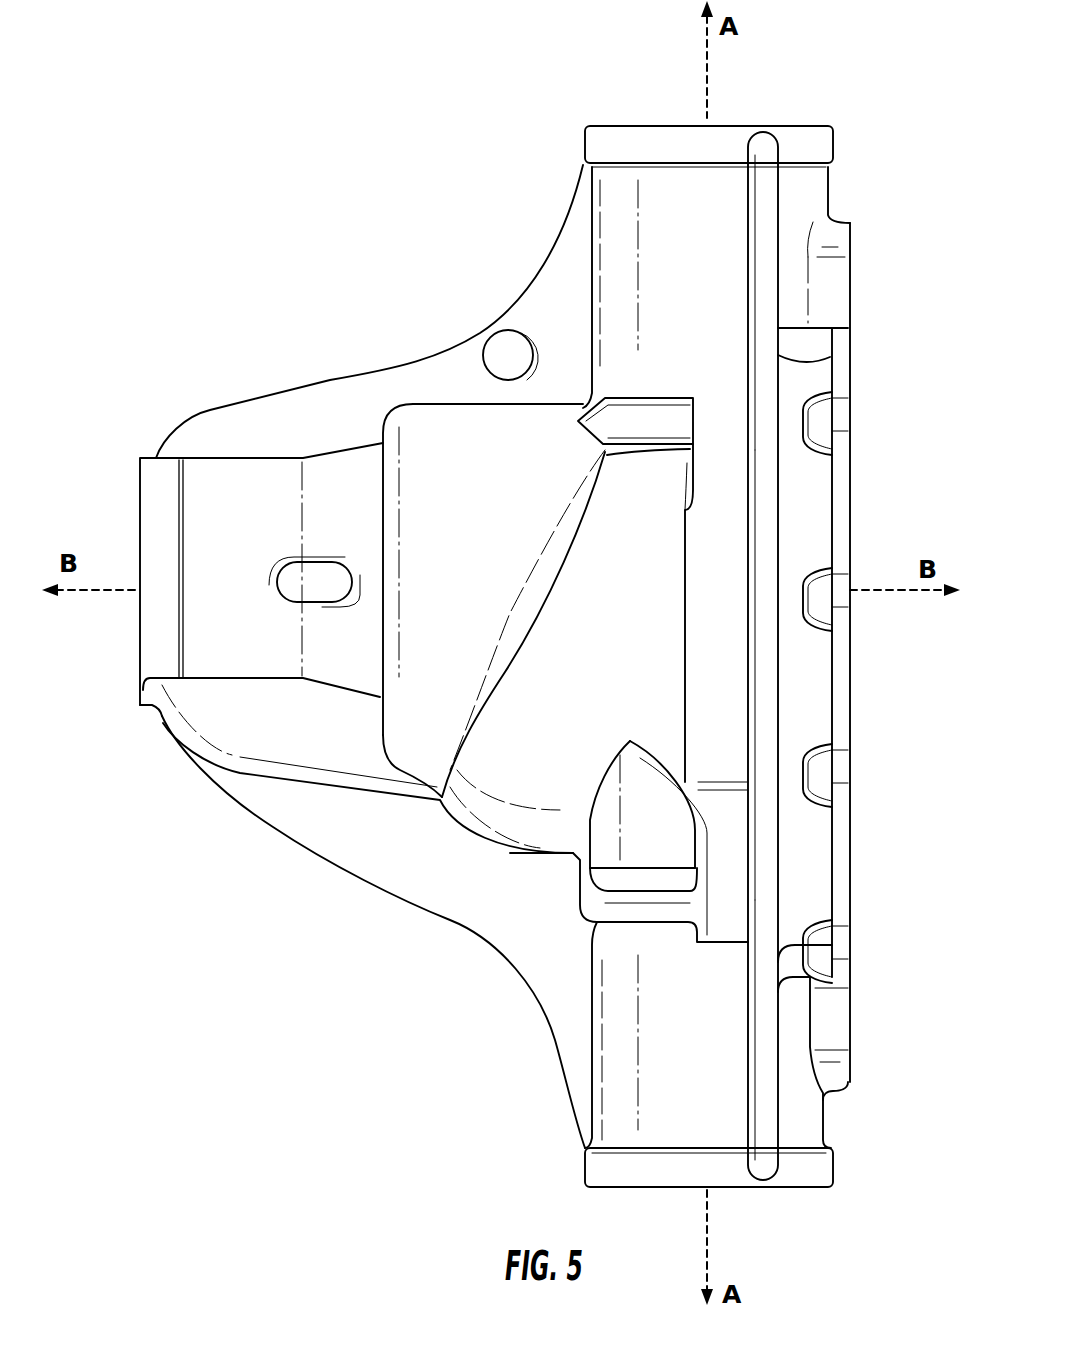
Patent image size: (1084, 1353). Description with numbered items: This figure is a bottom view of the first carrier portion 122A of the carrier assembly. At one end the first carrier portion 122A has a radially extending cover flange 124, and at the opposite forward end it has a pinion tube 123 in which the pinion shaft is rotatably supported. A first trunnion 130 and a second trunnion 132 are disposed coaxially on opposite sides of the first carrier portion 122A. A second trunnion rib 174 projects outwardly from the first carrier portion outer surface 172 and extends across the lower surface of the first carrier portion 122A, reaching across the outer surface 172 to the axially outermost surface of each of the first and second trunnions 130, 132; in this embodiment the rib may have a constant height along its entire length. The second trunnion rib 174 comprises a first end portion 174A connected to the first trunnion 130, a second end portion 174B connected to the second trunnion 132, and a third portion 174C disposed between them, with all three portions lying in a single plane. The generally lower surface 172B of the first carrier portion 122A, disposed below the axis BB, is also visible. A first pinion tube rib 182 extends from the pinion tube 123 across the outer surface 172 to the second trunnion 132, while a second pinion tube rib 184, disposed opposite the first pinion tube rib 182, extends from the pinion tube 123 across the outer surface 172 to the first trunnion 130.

The first carrier portion 122A is at (325, 268).
The pinion tube 123 is at (160, 492).
The first pinion tube rib 182 is at (270, 415).
The first carrier portion outer surface 172 is at (452, 420).
The first carrier portion lower surface 172B is at (713, 757).
The second pinion tube rib 184 is at (385, 855).
The second trunnion 132 is at (805, 185).
The cover flange 124 is at (843, 473).
The first trunnion 130 is at (615, 1102).
The second trunnion rib 174 is at (770, 1093).
The first end portion 174A is at (763, 1127).
The second end portion 174B is at (768, 197).
The third portion 174C is at (767, 700).